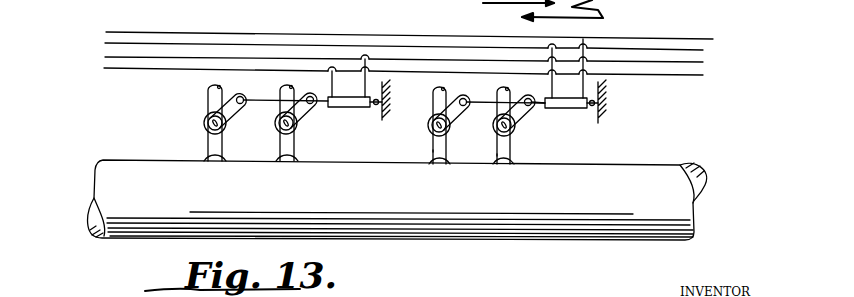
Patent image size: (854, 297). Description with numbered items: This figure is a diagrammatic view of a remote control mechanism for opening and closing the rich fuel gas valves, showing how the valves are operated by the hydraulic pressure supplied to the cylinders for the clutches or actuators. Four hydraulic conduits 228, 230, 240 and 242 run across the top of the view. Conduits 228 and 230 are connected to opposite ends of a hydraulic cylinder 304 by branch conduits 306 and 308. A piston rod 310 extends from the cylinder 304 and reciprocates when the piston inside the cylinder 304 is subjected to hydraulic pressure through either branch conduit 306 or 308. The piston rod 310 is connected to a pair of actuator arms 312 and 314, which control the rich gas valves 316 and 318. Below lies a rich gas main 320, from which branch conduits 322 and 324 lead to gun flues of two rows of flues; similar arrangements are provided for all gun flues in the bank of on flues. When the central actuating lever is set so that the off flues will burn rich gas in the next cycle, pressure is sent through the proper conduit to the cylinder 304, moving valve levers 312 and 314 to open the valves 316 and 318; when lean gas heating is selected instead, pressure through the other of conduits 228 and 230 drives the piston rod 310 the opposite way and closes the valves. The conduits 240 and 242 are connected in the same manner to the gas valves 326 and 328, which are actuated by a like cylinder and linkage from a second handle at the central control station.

The conduit 228 is at (713, 39).
The conduit 230 is at (706, 50).
The conduit 240 is at (706, 62).
The conduit 242 is at (706, 75).
The hydraulic cylinder 304 is at (577, 110).
The branch conduit 306 is at (590, 42).
The branch conduit 308 is at (580, 52).
The piston rod 310 is at (542, 110).
The actuator arm 312 is at (497, 112).
The actuator arm 314 is at (433, 112).
The rich gas valve 316 is at (520, 138).
The rich gas valve 318 is at (474, 101).
The rich gas main 320 is at (444, 199).
The branch conduit 322 is at (497, 155).
The branch conduit 324 is at (433, 151).
The gas valve 326 is at (275, 124).
The gas valve 328 is at (205, 125).